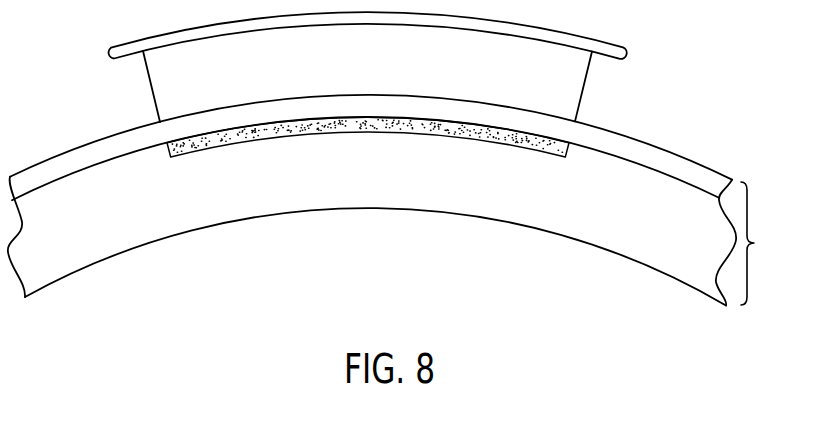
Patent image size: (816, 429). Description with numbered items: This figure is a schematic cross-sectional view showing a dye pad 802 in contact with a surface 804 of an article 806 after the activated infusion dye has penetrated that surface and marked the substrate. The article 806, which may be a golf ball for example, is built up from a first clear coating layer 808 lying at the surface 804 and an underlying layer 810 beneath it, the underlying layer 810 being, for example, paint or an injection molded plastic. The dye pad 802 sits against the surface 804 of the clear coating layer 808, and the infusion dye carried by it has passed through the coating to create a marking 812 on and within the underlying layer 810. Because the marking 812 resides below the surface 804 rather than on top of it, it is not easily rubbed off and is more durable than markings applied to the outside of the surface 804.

The dye pad 802 is at (153, 99).
The surface 804 is at (656, 147).
The article 806 is at (401, 241).
The first clear coating layer 808 is at (694, 173).
The underlying layer 810 is at (644, 247).
The marking 812 is at (352, 127).